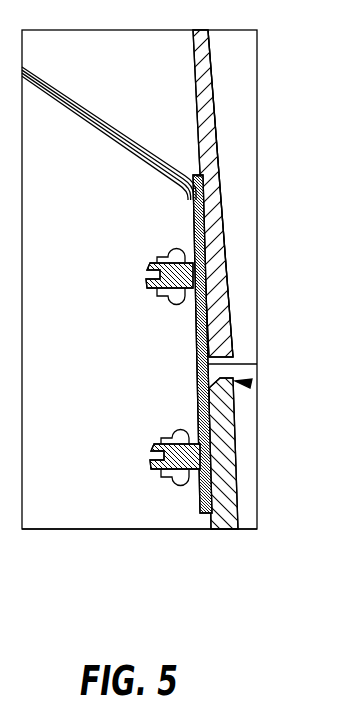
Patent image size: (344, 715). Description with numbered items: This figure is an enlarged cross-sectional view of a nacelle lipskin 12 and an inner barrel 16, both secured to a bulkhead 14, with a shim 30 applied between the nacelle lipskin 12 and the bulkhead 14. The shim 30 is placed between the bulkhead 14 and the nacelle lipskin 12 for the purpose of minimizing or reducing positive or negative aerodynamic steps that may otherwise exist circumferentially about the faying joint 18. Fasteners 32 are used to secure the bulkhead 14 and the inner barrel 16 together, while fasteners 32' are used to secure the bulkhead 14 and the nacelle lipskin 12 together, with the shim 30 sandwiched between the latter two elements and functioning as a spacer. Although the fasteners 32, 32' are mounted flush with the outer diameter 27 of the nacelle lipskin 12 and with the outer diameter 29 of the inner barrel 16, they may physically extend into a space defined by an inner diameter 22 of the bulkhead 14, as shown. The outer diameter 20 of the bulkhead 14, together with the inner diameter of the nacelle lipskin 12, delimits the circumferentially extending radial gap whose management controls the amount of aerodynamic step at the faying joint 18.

The nacelle lipskin 12 is at (212, 140).
The bulkhead 14 is at (121, 133).
The inner barrel 16 is at (236, 498).
The faying joint 18 is at (250, 384).
The outer diameter of the bulkhead 20 is at (257, 364).
The inner diameter of the bulkhead 22 is at (192, 224).
The outer diameter of the nacelle lipskin 27 is at (226, 228).
The outer diameter of the inner barrel 29 is at (237, 416).
The shim 30 is at (218, 199).
The fasteners 32 is at (173, 465).
The fasteners 32' is at (162, 283).